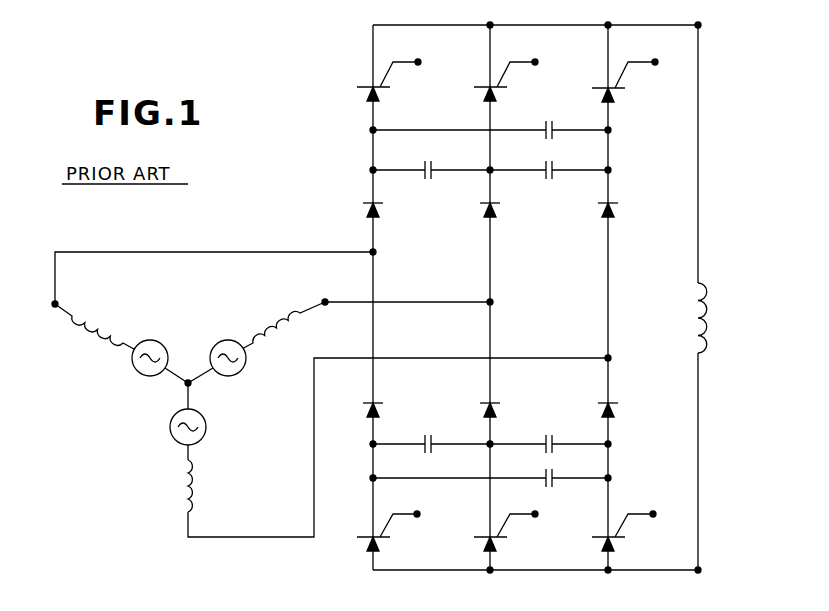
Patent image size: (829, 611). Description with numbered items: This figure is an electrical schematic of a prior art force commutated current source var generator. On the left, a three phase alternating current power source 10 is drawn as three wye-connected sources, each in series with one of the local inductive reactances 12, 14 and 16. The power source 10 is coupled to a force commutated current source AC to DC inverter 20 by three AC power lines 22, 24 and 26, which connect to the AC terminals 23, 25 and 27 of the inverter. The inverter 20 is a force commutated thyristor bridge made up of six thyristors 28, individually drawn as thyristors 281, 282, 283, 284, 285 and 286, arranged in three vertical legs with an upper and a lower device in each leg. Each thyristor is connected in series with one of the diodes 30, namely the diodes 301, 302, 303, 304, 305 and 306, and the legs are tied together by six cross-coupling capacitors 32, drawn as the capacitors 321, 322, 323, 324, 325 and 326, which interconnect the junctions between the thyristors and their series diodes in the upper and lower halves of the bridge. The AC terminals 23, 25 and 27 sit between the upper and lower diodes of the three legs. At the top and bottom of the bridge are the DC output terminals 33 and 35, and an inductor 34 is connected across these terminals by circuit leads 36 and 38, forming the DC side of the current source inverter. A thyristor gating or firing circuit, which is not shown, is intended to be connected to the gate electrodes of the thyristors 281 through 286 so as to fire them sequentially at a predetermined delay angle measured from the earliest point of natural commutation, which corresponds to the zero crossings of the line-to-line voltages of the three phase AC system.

The three phase alternating current power source 10 is at (200, 335).
The local inductive reactance 12 is at (108, 318).
The local inductive reactance 14 is at (263, 314).
The local inductive reactance 16 is at (172, 479).
The force commutated current source AC to DC inverter 20 is at (572, 274).
The AC power line 22 is at (235, 252).
The AC terminal 23 is at (377, 252).
The AC power line 24 is at (346, 302).
The AC terminal 25 is at (493, 302).
The AC power line 26 is at (343, 357).
The AC terminal 27 is at (612, 357).
The thyristors 28 is at (514, 309).
The thyristor 281 is at (392, 85).
The thyristor 282 is at (508, 91).
The thyristor 283 is at (622, 91).
The thyristor 284 is at (384, 546).
The thyristor 285 is at (500, 546).
The thyristor 286 is at (618, 546).
The series connected diodes 30 is at (514, 309).
The series connected diode 301 is at (382, 212).
The series connected diode 302 is at (498, 218).
The series connected diode 303 is at (622, 212).
The series connected diode 304 is at (384, 407).
The series connected diode 305 is at (500, 405).
The series connected diode 306 is at (618, 407).
The cross-coupling capacitors 32 is at (490, 316).
The cross-coupling capacitor 321 is at (422, 159).
The cross-coupling capacitor 322 is at (541, 140).
The cross-coupling capacitor 323 is at (553, 167).
The cross-coupling capacitor 324 is at (422, 451).
The cross-coupling capacitor 325 is at (537, 453).
The cross-coupling capacitor 326 is at (569, 490).
The DC output terminal 33 is at (701, 25).
The inductor 34 is at (710, 320).
The DC output terminal 35 is at (700, 572).
The circuit lead 36 is at (698, 174).
The circuit lead 38 is at (698, 460).